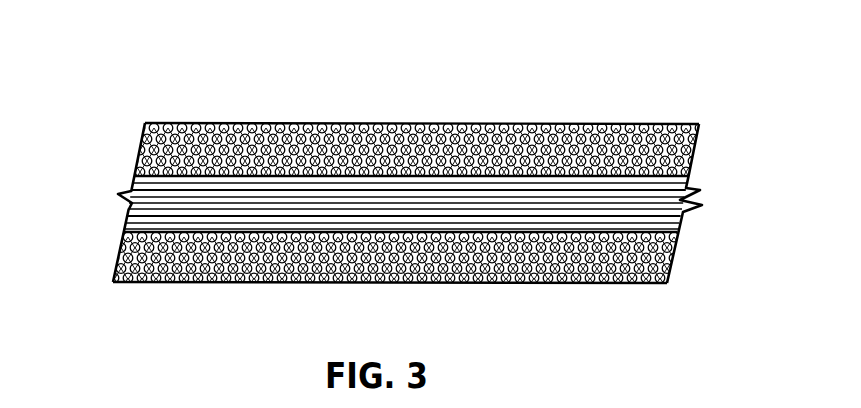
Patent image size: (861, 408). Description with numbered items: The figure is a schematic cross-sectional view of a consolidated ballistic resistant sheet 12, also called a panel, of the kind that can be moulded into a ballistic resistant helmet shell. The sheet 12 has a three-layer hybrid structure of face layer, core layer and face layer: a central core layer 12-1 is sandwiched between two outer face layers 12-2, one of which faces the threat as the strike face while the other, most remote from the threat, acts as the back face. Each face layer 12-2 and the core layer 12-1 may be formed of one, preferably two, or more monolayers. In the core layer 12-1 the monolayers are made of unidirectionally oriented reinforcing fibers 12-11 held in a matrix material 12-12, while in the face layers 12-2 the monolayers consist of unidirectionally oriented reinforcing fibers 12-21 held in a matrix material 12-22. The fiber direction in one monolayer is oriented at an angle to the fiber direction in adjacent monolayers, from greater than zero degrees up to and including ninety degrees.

The consolidated ballistic resistant sheet 12 is at (604, 100).
The core layer 12-1 is at (455, 207).
The UD oriented reinforcing fibers 12-11 is at (688, 200).
The matrix material 12-12 is at (668, 222).
The face layer 12-2 is at (302, 123).
The UD oriented reinforcing fibers 12-21 is at (143, 132).
The matrix material 12-22 is at (142, 172).